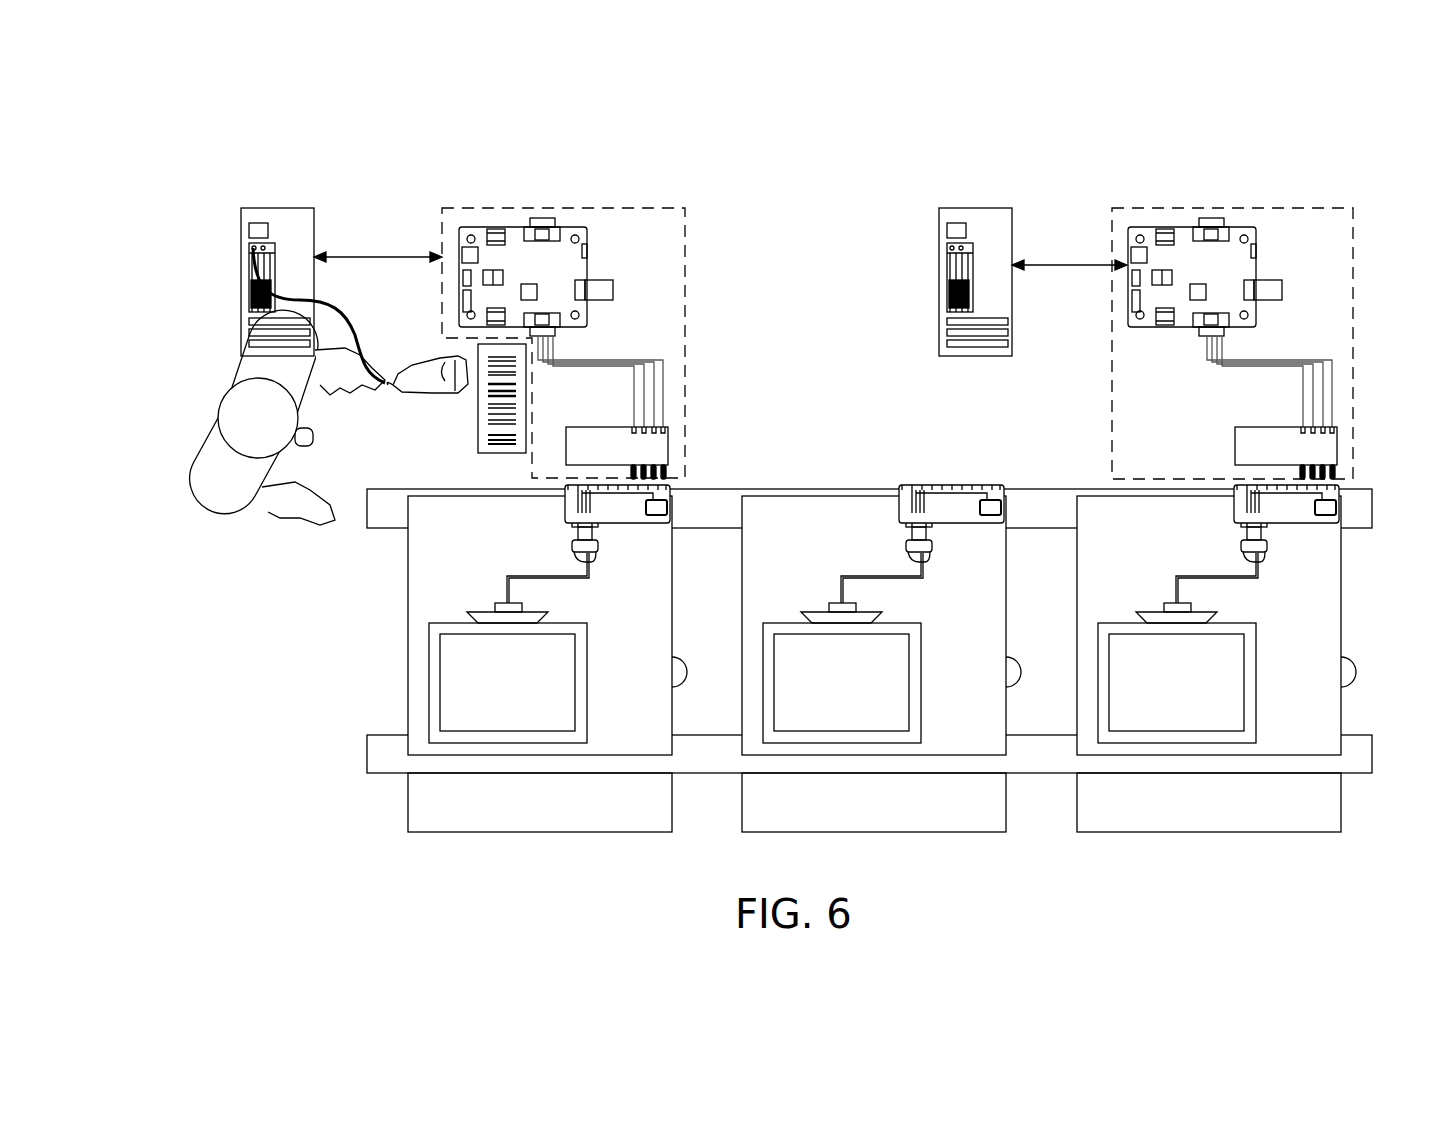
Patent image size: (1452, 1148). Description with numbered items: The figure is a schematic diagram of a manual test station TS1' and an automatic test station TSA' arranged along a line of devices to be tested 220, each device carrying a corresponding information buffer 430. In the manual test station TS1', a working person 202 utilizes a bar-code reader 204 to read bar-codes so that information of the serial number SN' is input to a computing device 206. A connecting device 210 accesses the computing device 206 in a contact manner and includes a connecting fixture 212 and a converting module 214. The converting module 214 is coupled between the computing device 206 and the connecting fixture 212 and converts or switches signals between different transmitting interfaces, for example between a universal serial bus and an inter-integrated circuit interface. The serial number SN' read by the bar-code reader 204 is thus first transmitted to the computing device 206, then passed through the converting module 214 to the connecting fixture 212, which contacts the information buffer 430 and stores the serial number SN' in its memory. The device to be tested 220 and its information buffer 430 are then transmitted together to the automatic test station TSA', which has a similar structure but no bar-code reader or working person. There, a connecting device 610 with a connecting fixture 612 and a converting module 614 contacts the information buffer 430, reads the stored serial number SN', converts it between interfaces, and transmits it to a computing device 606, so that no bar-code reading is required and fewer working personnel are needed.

The working person 202 is at (218, 405).
The bar-code reader 204 is at (418, 362).
The computing device 206 is at (241, 245).
The connecting device 210 is at (685, 247).
The connecting fixture 212 is at (600, 427).
The converting module 214 is at (587, 250).
The device to be tested 220 is at (1205, 683).
The information buffer 430 is at (1329, 504).
The computing device 606 is at (939, 244).
The connecting device 610 is at (1108, 408).
The connecting fixture 612 is at (1233, 438).
The converting module 614 is at (1256, 250).
The serial number SN' is at (465, 398).
The manual test station TS1' is at (691, 137).
The automatic test station TSA' is at (1345, 137).